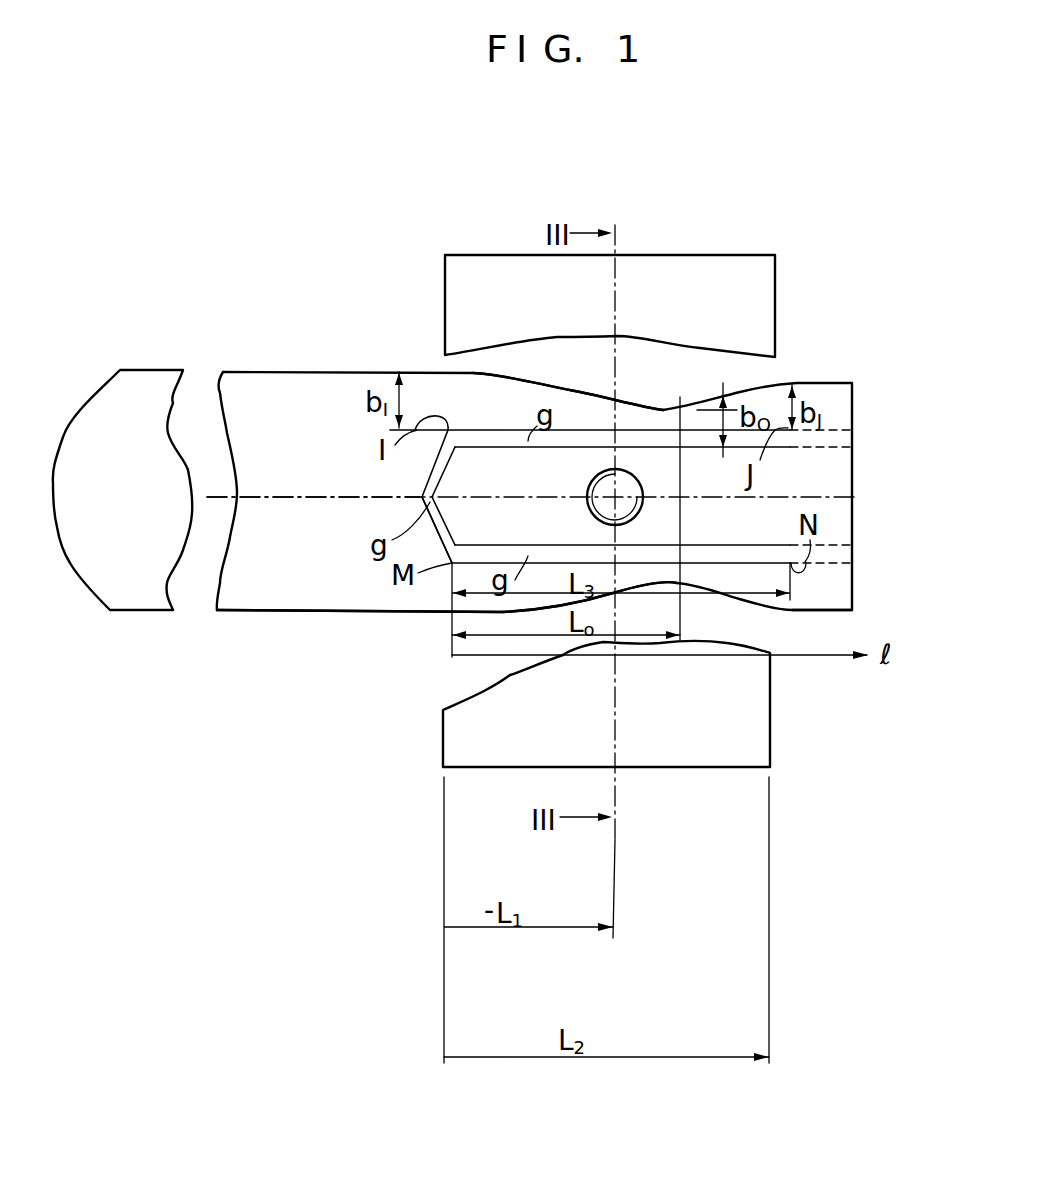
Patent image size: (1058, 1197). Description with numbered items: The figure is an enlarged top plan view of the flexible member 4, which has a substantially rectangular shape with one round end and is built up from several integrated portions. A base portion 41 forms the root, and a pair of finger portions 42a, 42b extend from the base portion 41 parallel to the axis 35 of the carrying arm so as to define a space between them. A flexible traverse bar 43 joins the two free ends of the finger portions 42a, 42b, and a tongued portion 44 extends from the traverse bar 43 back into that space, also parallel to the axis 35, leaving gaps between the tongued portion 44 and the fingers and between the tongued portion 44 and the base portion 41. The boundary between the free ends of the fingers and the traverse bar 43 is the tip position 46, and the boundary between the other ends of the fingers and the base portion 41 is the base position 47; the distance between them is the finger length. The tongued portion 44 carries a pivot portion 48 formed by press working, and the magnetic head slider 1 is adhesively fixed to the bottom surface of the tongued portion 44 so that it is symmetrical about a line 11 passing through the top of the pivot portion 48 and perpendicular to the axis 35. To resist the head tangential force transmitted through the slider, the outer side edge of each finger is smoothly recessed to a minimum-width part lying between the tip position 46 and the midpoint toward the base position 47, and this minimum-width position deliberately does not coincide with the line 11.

The magnetic head slider 1 is at (763, 279).
The flexible member 4 is at (296, 384).
The line (rolling axis) 11 is at (615, 727).
The axis of the carrying arm 35 is at (258, 493).
The base portion 41 is at (340, 555).
The finger portion 42a is at (575, 405).
The finger portion 42b is at (647, 573).
The flexible traverse bar 43 is at (840, 513).
The tongued portion 44 is at (727, 525).
The tip position 46 is at (838, 612).
The base position 47 is at (452, 598).
The pivot portion 48 is at (586, 505).